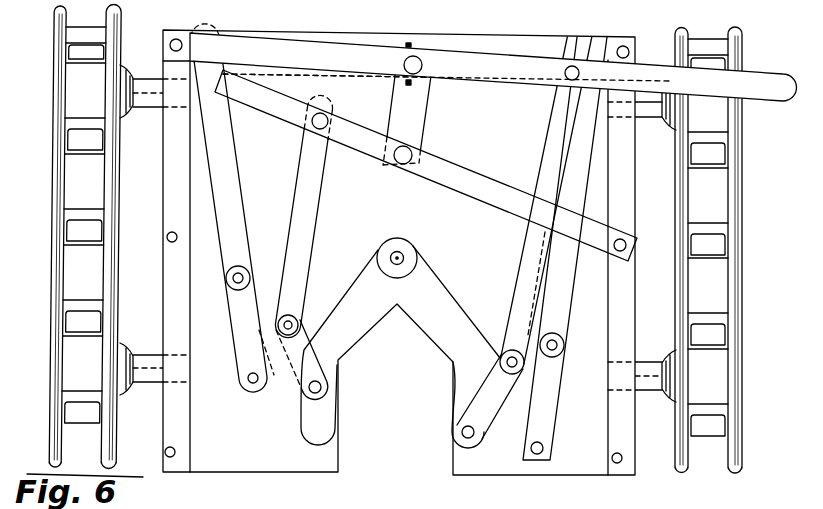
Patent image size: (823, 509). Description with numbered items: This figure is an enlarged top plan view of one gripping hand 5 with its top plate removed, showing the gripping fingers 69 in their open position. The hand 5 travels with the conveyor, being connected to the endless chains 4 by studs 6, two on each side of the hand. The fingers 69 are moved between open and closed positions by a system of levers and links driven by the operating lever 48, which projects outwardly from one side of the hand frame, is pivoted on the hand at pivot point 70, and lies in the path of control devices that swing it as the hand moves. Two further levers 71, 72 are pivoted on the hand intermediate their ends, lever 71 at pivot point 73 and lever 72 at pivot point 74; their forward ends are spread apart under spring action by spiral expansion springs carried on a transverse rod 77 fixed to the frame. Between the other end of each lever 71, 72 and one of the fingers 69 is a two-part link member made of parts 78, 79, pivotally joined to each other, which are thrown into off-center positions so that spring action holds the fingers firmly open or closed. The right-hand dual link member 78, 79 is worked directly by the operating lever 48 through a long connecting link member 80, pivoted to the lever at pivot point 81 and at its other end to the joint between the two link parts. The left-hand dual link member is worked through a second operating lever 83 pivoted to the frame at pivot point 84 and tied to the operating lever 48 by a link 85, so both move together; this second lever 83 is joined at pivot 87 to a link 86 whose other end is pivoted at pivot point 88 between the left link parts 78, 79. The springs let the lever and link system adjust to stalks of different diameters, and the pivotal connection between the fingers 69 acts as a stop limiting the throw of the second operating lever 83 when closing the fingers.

The endless chain 4 is at (53, 263).
The gripping hand 5 is at (588, 470).
The stud 6 is at (651, 386).
The operating lever 48 is at (758, 76).
The gripping finger 69 is at (360, 290).
The pivot point 70 is at (180, 39).
The lever 71 is at (233, 183).
The lever 72 is at (567, 298).
The pivot point 73 is at (228, 290).
The pivot point 74 is at (565, 351).
The transverse rod 77 is at (312, 77).
The link part 78 is at (533, 56).
The link part 79 is at (298, 372).
The connecting link member 80 is at (527, 253).
The pivot point 81 is at (572, 66).
The second operating lever 83 is at (470, 170).
The pivot point 84 is at (624, 243).
The link 85 is at (433, 103).
The link 86 is at (318, 188).
The pivot 87 is at (330, 118).
The pivot point 88 is at (297, 322).